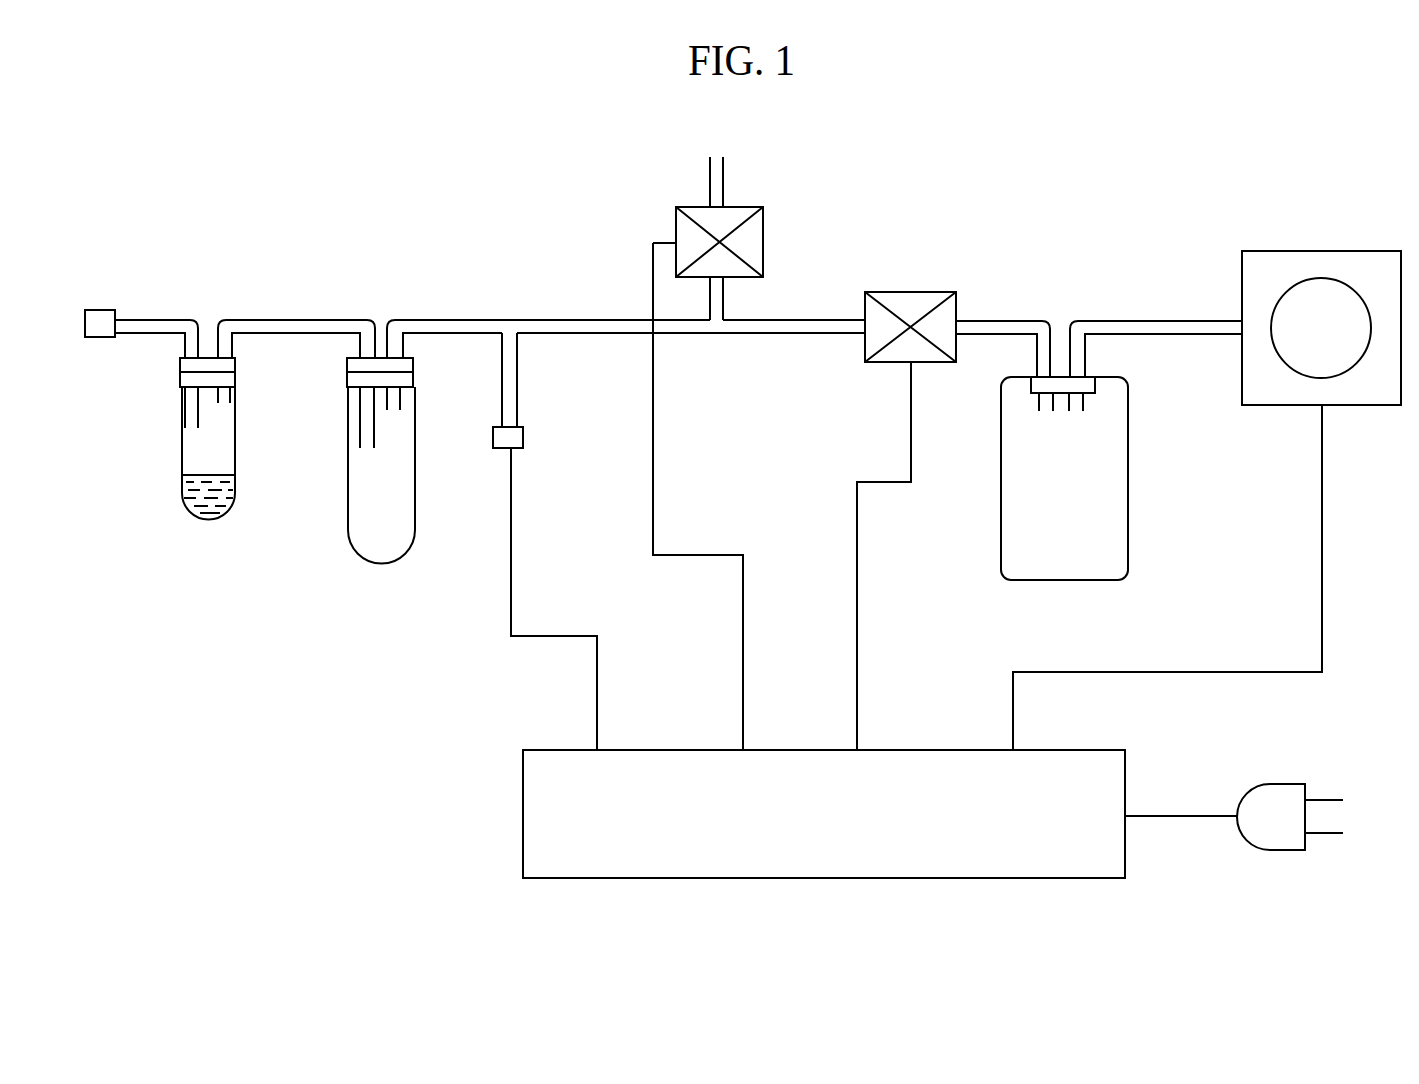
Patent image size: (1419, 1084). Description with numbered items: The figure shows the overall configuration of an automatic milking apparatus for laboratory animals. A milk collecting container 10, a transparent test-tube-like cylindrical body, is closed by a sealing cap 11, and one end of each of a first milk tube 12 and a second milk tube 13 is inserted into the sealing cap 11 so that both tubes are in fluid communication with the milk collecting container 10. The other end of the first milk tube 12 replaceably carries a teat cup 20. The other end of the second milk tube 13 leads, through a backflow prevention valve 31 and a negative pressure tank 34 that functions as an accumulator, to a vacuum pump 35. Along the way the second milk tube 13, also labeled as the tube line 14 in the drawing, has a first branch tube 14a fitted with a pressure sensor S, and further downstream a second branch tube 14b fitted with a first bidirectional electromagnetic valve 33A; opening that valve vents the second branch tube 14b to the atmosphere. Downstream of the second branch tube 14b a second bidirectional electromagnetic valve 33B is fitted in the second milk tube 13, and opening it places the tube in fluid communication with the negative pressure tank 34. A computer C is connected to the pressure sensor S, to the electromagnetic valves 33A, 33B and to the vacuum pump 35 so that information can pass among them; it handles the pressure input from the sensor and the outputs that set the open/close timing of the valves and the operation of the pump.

The milk collecting container 10 is at (195, 507).
The sealing cap 11 is at (227, 365).
The first milk tube 12 is at (150, 315).
The second milk tube 13 is at (297, 317).
The main tube line 14 is at (568, 330).
The first branch tube 14a is at (509, 388).
The second branch tube 14b is at (727, 305).
The teat cup 20 is at (102, 337).
The backflow prevention valve 31 is at (387, 545).
The first bidirectional electromagnetic valve 33A is at (752, 240).
The second bidirectional electromagnetic valve 33B is at (939, 298).
The negative pressure tank 34 is at (1120, 548).
The vacuum pump 35 is at (1376, 398).
The pressure sensor S is at (518, 436).
The computer C is at (1000, 863).